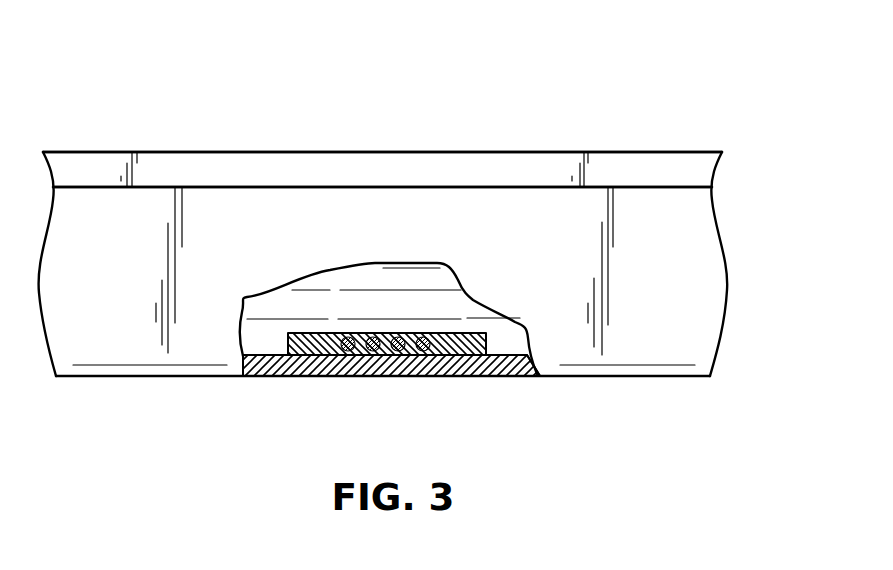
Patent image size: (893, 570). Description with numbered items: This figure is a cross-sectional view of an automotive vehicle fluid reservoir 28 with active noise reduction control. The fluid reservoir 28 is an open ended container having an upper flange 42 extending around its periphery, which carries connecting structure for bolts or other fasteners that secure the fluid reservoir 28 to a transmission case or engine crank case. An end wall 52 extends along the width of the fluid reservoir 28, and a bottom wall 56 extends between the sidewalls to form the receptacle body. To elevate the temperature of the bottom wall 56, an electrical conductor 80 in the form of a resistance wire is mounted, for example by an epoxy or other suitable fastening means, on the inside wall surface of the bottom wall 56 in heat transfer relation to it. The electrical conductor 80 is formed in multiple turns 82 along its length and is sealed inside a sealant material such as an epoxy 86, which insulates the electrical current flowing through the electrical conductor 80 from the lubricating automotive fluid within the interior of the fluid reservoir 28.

The fluid reservoir 28 is at (120, 100).
The upper flange 42 is at (493, 177).
The end wall 52 is at (692, 263).
The bottom wall 56 is at (515, 362).
The electrical conductor 80 is at (320, 314).
The turns 82 is at (326, 362).
The epoxy 86 is at (457, 333).